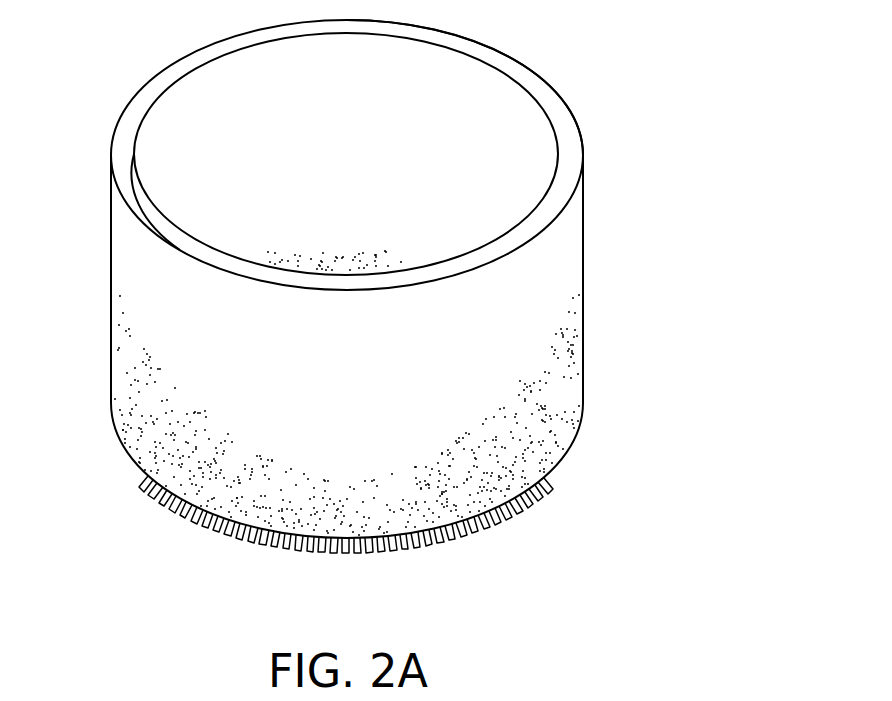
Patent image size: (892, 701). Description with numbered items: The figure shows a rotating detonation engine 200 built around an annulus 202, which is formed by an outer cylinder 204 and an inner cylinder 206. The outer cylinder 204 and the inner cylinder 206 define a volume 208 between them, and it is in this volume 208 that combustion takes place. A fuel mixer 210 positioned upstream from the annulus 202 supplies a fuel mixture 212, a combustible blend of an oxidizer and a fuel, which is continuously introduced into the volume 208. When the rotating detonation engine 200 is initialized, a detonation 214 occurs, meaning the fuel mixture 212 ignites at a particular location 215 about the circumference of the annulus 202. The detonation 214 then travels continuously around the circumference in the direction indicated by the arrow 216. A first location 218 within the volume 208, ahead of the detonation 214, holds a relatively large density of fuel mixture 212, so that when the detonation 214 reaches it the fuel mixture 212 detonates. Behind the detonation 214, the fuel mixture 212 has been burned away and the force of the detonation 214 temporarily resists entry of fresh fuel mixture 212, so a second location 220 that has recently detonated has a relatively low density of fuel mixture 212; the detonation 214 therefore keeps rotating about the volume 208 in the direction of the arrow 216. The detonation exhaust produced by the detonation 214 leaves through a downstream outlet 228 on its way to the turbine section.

The rotating detonation engine 200 is at (700, 78).
The annulus 202 is at (110, 123).
The outer cylinder 204 is at (112, 183).
The inner cylinder 206 is at (133, 150).
The volume 208 is at (130, 188).
The fuel mixer 210 is at (394, 537).
The fuel mixture 212 is at (235, 497).
The detonation 214 is at (248, 492).
The location 215 is at (243, 492).
The arrow 216 is at (192, 570).
The first location 218 is at (242, 502).
The second location 220 is at (257, 480).
The downstream outlet 228 is at (558, 93).